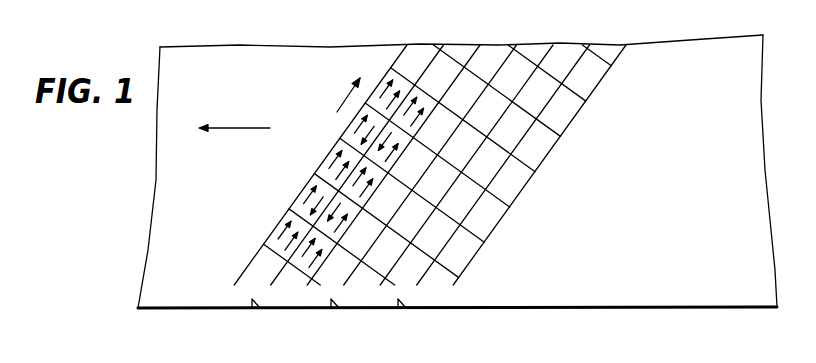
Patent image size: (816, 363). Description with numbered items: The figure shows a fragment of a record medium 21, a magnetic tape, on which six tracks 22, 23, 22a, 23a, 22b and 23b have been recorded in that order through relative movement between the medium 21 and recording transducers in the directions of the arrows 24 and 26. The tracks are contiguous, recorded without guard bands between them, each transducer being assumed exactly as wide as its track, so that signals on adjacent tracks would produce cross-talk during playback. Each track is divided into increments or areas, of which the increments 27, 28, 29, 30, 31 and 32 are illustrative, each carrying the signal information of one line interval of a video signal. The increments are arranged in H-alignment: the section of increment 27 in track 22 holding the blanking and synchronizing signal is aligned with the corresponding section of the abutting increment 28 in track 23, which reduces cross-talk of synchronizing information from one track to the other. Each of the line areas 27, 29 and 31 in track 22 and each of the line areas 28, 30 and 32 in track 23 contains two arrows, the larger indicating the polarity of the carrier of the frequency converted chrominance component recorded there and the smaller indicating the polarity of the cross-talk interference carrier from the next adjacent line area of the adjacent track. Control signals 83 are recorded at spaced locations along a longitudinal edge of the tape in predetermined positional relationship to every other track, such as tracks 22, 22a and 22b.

The record medium 21 is at (174, 52).
The track 22 is at (418, 46).
The track 23 is at (459, 46).
The track 22a is at (500, 45).
The track 23a is at (537, 45).
The track 22b is at (582, 46).
The track 23b is at (615, 46).
The arrow 24 is at (346, 97).
The arrow 26 is at (250, 124).
The increment or line area 27 is at (273, 227).
The increment or line area 28 is at (314, 270).
The increment or line area 29 is at (300, 193).
The increment or line area 30 is at (340, 235).
The increment or line area 31 is at (323, 162).
The increment or line area 32 is at (370, 198).
The recorded control signals 83 is at (260, 311).